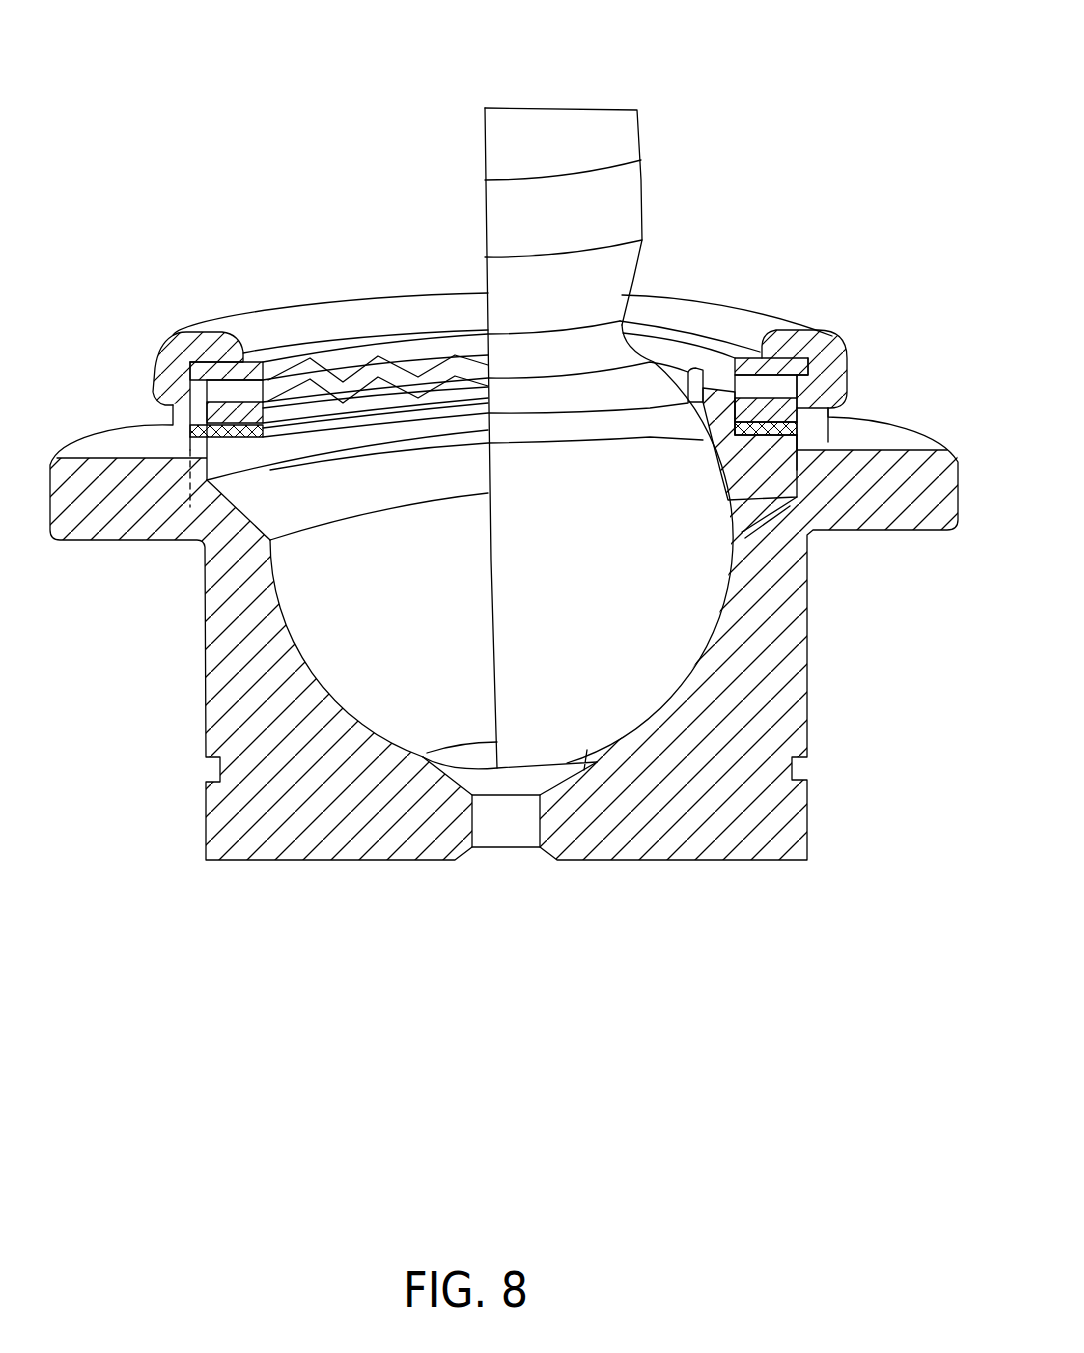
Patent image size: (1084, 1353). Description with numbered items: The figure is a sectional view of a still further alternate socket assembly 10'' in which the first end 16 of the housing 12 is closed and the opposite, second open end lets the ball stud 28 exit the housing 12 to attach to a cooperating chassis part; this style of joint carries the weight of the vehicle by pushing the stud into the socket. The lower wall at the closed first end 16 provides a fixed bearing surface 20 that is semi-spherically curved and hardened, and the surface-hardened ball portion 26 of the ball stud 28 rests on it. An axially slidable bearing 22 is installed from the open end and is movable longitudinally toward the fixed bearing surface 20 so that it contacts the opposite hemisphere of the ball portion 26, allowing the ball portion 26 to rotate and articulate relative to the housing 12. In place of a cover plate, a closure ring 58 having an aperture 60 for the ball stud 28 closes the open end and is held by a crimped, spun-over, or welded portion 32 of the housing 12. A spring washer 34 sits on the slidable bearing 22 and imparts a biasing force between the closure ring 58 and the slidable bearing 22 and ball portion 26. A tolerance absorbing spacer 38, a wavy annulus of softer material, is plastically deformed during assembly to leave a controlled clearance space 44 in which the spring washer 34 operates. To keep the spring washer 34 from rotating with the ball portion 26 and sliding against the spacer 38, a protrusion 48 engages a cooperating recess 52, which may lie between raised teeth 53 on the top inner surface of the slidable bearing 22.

The socket assembly 10'' is at (520, 188).
The housing 12 is at (806, 696).
The first end 16 is at (497, 868).
The fixed bearing surface 20 is at (337, 700).
The axially slidable bearing 22 is at (783, 470).
The ball portion 26 is at (627, 500).
The ball stud 28 is at (647, 132).
The crimped, spun-over, or welded portion 32 is at (190, 333).
The spring washer 34 is at (797, 420).
The tolerance absorbing spacer 38 is at (207, 437).
The clearance space 44 is at (806, 452).
The protrusion 48 is at (193, 437).
The recess 52 is at (740, 357).
The raised teeth 53 is at (693, 395).
The closure ring 58 is at (178, 352).
The aperture 60 is at (280, 365).